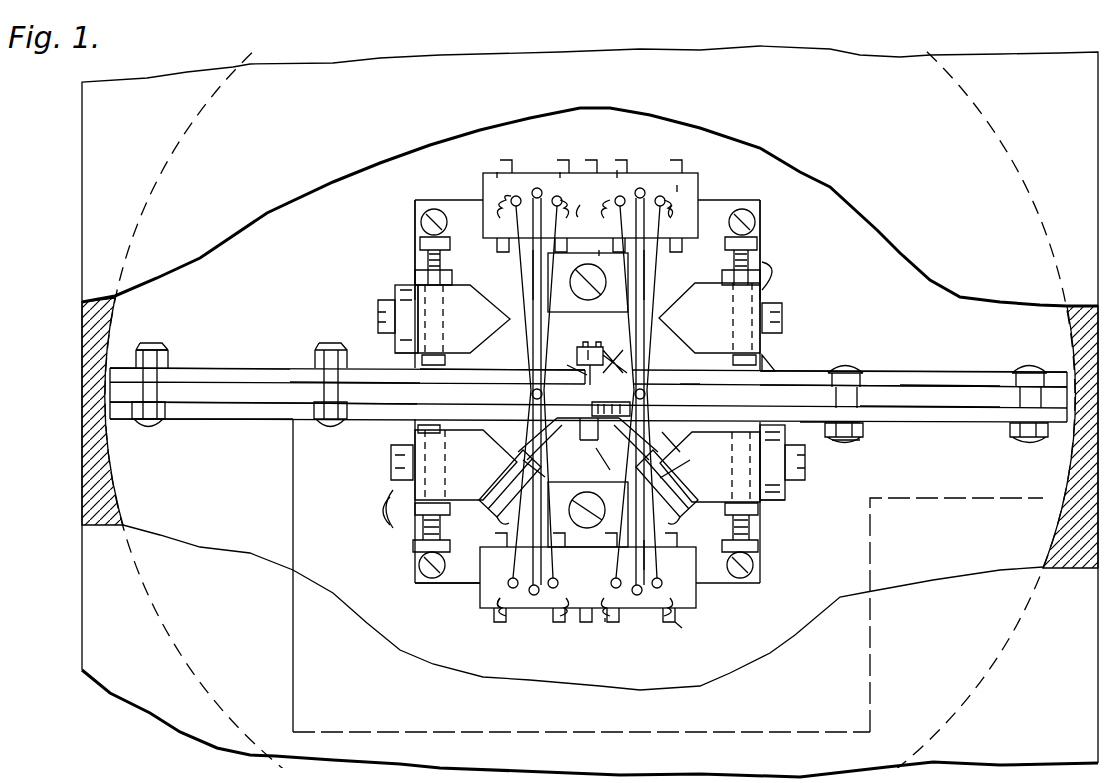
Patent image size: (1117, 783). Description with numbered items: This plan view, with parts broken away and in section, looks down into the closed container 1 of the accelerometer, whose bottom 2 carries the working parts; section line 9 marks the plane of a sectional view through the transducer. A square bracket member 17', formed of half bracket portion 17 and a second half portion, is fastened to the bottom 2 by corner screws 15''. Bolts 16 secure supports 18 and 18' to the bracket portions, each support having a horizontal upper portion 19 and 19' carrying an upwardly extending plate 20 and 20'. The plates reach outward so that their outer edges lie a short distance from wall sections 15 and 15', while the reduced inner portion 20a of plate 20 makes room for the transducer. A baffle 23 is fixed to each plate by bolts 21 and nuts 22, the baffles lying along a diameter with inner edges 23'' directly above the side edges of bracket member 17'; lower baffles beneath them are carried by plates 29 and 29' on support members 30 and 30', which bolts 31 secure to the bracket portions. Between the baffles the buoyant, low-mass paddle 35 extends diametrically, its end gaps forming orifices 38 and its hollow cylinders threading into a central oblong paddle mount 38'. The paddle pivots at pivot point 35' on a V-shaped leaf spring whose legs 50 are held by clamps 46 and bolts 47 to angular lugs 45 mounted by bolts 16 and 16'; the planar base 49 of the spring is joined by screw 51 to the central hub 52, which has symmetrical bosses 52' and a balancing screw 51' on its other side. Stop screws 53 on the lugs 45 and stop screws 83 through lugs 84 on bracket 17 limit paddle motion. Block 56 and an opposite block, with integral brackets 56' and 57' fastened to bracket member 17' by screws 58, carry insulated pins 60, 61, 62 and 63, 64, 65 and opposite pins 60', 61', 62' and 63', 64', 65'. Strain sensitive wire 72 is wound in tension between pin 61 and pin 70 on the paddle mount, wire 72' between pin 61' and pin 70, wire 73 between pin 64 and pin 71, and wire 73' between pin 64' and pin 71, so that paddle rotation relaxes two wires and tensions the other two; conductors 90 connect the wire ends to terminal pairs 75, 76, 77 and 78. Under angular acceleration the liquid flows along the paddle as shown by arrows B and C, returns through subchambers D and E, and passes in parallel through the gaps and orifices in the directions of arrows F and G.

The container 1 is at (104, 322).
The bottom 2 is at (1103, 437).
The section line 9 is at (108, 392).
The container wall section 15 is at (558, 395).
The container wall section 15' is at (1047, 363).
The screws 15'' is at (600, 396).
The bolts 16 is at (586, 392).
The bolts 16' is at (589, 392).
The half bracket portion 17 is at (587, 273).
The square bracket member 17' is at (417, 566).
The support 18 is at (379, 310).
The support 18' is at (787, 517).
The horizontally extending upper portion 19 is at (387, 358).
The horizontally extending upper portion 19' is at (743, 469).
The upwardly extending plate 20 is at (200, 356).
The upwardly extending plate 20' is at (913, 408).
The inner portion of plate 20a is at (519, 371).
The bolts 21 is at (312, 428).
The nuts 22 is at (320, 352).
The baffle 23 is at (629, 370).
The inner edges of baffles 23'' is at (358, 393).
The plate 29 is at (205, 393).
The plate 29' is at (913, 366).
The support member 30 is at (430, 465).
The support member 30' is at (791, 358).
The bolts 31 is at (782, 274).
The paddle 35 is at (406, 425).
The paddle pivot point 35' is at (566, 360).
The orifices 38 is at (582, 408).
The paddle mount 38' is at (679, 368).
The lugs 45 is at (397, 500).
The clamps 46 is at (690, 456).
The bolts 47 is at (667, 480).
The planar base 49 is at (588, 426).
The legs 50 is at (580, 442).
The screw 51 is at (593, 409).
The screw 51' is at (606, 337).
The central hub 52 is at (602, 352).
The symmetrical boss 52' is at (607, 383).
The limit motion stop screws 53 is at (420, 570).
The block 56 is at (568, 200).
The bracket 56' is at (591, 240).
The bracket 57' is at (588, 525).
The screws 58 is at (580, 313).
The pin 60 is at (514, 366).
The pin 60' is at (506, 614).
The pin 61 is at (539, 354).
The pin 61' is at (511, 627).
The pin 62 is at (561, 356).
The pin 62' is at (552, 620).
The pin 63 is at (612, 360).
The pin 63' is at (596, 592).
The pin 64 is at (647, 355).
The pin 64' is at (631, 623).
The pin 65 is at (658, 363).
The pin 65' is at (674, 619).
The pin 70 is at (532, 395).
The pin 71 is at (645, 395).
The strain sensitive wire 72 is at (507, 275).
The strain wire 72' is at (551, 470).
The strain wire 73 is at (667, 275).
The strain wire 73' is at (666, 555).
The terminals 75 is at (498, 172).
The terminals 76 is at (617, 170).
The terminals 77 is at (494, 618).
The terminals 78 is at (605, 622).
The motion limiting stop screws 83 is at (420, 240).
The lugs 84 is at (589, 318).
The conductors 90 is at (580, 201).
The arrows B is at (168, 266).
The arrows C is at (173, 557).
The subchamber D is at (863, 277).
The subchamber E is at (839, 564).
The arrows F is at (1071, 347).
The arrows G is at (139, 308).